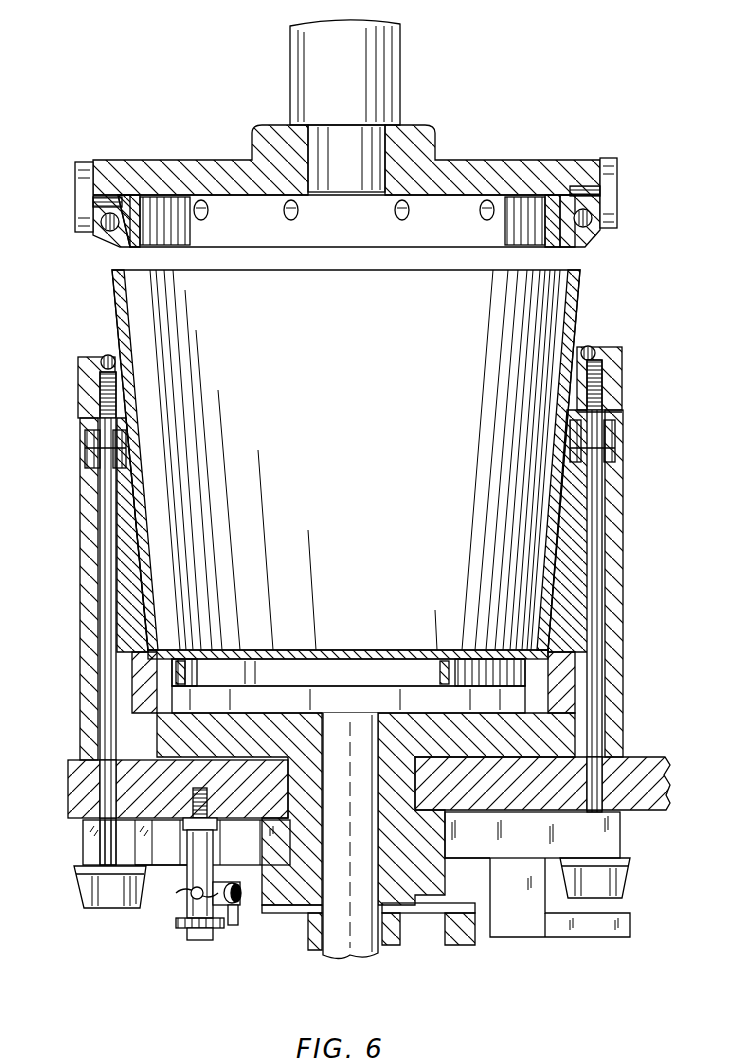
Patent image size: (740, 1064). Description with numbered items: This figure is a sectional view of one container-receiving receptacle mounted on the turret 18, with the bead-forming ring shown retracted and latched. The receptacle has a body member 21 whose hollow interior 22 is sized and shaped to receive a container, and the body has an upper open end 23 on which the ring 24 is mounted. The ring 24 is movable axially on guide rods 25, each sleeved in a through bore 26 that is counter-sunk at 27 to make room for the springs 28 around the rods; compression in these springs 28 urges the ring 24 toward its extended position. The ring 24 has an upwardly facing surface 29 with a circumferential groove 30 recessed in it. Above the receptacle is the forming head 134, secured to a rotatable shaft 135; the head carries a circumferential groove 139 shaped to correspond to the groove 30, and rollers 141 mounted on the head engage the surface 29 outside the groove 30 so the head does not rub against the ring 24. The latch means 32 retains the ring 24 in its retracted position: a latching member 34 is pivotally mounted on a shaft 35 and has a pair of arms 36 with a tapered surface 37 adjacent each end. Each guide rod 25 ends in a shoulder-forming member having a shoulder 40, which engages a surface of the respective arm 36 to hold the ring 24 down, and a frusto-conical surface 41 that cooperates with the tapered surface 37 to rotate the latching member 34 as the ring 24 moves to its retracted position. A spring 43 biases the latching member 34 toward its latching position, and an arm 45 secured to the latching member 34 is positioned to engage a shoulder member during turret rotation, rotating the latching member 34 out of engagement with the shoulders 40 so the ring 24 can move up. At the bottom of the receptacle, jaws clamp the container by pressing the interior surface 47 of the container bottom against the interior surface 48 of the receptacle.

The shaft 135 is at (402, 78).
The forming head 134 is at (513, 158).
The rollers 141 is at (617, 174).
The circumferential groove 139 is at (590, 224).
The hollow interior 22 is at (352, 558).
The interior surface of the receptacle 48 is at (551, 581).
The interior surface of the container bottom 47 is at (541, 652).
The ring 24 is at (78, 378).
The upwardly facing surface 29 is at (621, 350).
The circumferential groove 30 is at (586, 346).
The guide rods 25 is at (96, 648).
The body member 21 is at (623, 538).
The upper open end 23 is at (570, 412).
The through bore 26 is at (100, 600).
The springs 28 is at (617, 427).
The counter-sink 27 is at (606, 448).
The shaft 35 is at (288, 890).
The latch means 32 is at (441, 958).
The tapered surface 37 is at (84, 838).
The shoulder 40 is at (76, 862).
The frusto-conical surface 41 is at (76, 880).
The turret 18 is at (638, 758).
The latching member 34 is at (620, 836).
The arms 36 is at (167, 866).
The spring 43 is at (248, 905).
The arm 45 is at (578, 937).